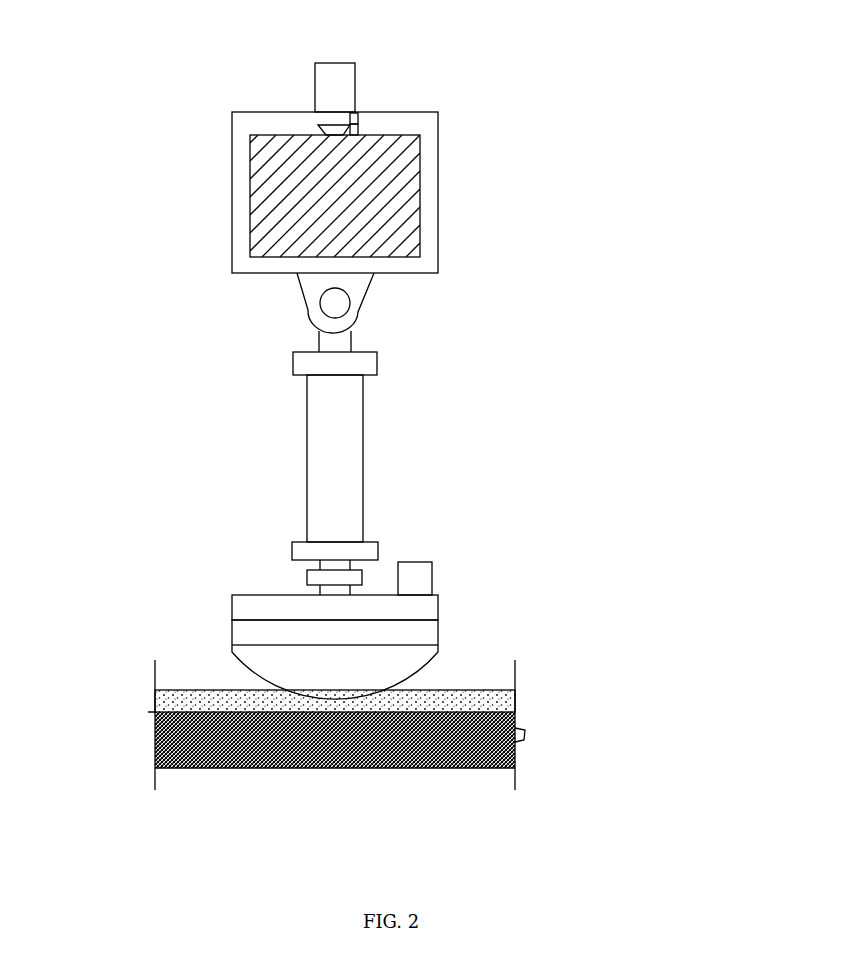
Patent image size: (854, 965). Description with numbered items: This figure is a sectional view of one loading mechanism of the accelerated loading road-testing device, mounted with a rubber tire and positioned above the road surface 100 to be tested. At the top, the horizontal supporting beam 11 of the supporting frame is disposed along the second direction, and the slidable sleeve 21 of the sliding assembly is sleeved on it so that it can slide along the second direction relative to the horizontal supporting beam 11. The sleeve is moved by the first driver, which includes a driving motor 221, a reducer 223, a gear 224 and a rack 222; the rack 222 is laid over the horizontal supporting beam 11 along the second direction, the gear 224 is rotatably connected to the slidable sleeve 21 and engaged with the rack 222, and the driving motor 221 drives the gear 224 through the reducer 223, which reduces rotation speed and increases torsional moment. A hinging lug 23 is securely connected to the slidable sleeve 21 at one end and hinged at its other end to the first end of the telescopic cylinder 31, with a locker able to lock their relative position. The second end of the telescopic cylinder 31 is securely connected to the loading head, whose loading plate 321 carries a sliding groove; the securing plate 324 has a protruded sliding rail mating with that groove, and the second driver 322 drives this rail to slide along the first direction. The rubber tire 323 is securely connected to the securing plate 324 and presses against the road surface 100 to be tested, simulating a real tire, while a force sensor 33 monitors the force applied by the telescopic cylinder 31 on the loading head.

The road surface to be tested 100 is at (150, 705).
The horizontal supporting beam 11 is at (291, 177).
The slidable sleeve 21 is at (241, 219).
The driving motor 221 is at (335, 75).
The rack 222 is at (333, 125).
The reducer 223 is at (393, 93).
The gear 224 is at (359, 129).
The hinging lug 23 is at (312, 300).
The telescopic cylinder 31 is at (314, 428).
The force sensor 33 is at (306, 581).
The loading plate 321 is at (252, 603).
The second driver 322 is at (432, 579).
The rubber tire 323 is at (266, 667).
The securing plate 324 is at (250, 633).